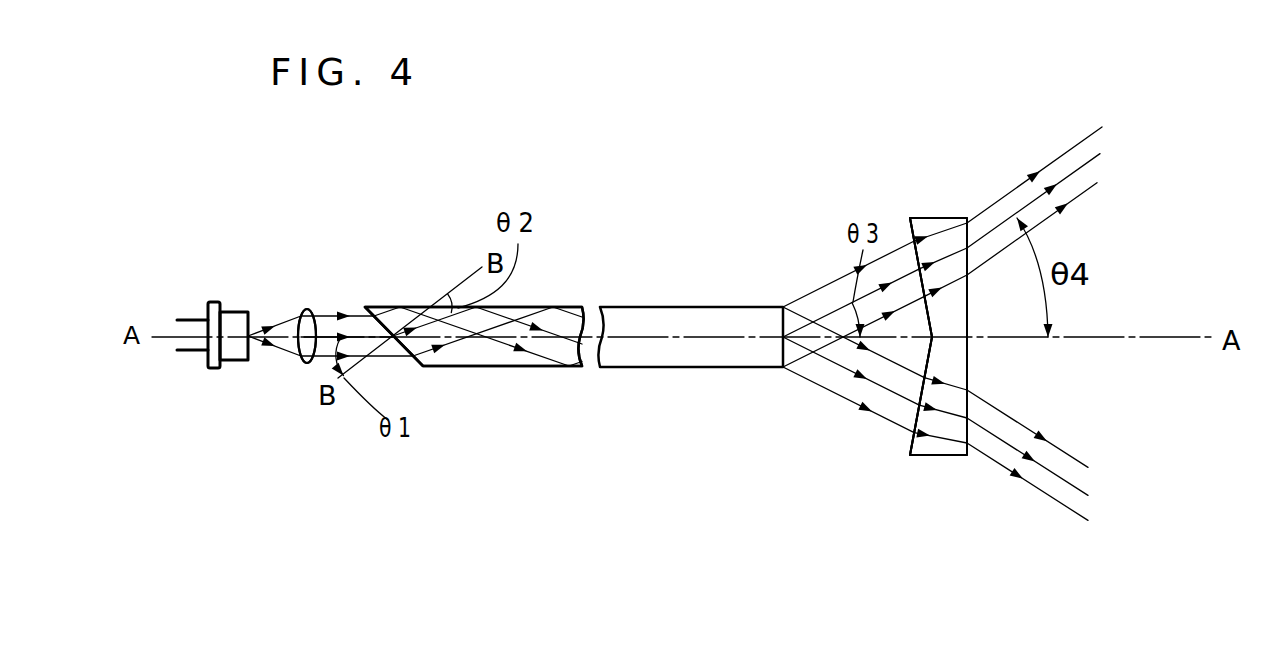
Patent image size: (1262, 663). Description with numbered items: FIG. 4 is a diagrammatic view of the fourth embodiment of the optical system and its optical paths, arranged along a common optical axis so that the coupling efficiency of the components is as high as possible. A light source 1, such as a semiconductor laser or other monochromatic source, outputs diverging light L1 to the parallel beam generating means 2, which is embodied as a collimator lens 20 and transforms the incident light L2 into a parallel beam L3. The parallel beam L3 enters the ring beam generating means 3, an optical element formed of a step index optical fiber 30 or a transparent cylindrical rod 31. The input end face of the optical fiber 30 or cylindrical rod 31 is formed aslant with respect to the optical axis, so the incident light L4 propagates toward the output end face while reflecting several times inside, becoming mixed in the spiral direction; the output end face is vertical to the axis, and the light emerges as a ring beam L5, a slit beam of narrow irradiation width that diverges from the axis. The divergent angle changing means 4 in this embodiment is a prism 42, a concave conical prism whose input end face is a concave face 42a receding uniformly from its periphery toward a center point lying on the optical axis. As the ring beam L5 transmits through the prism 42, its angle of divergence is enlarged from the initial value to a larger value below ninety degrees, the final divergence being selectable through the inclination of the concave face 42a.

The light source 1 is at (236, 362).
The parallel beam generating means 2 is at (307, 370).
The collimator lens 20 is at (302, 362).
The ring beam generating means 3 is at (508, 372).
The optical fiber 30 is at (499, 374).
The cylindrical rod 31 is at (574, 368).
The divergent angle changing means 4 is at (942, 215).
The prism 42 is at (935, 458).
The concave face 42a is at (910, 454).
The light L1 is at (296, 318).
The incident light L2 is at (317, 306).
The parallel beam L3 is at (335, 315).
The incident light L4 is at (425, 307).
The ring beam L5 is at (808, 295).